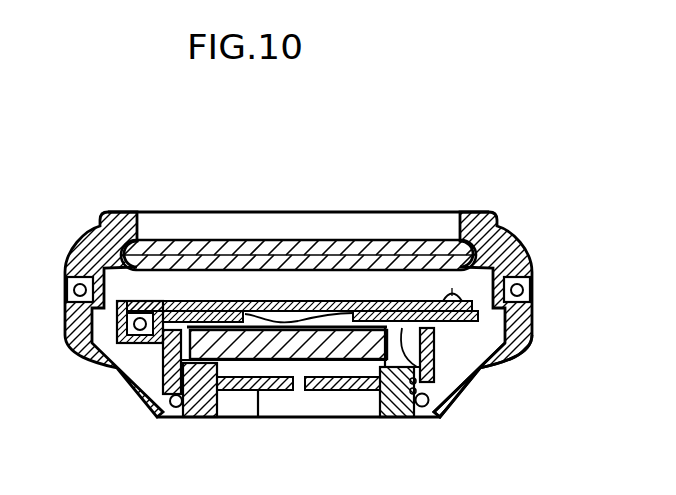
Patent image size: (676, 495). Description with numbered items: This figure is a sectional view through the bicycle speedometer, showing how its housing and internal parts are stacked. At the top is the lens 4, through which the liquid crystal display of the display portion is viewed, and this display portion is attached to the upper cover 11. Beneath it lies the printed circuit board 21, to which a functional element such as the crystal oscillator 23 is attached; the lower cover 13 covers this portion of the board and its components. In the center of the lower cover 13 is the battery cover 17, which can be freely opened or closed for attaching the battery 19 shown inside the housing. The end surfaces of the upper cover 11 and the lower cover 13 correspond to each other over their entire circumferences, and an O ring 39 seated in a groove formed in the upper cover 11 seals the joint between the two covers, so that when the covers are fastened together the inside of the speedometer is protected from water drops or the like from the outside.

The lens 4 is at (180, 221).
The upper cover 11 is at (500, 250).
The lower cover 13 is at (500, 363).
The battery cover 17 is at (403, 418).
The battery 19 is at (270, 352).
The printed circuit board 21 is at (290, 305).
The crystal oscillator 23 is at (122, 372).
The O ring 39 is at (523, 290).